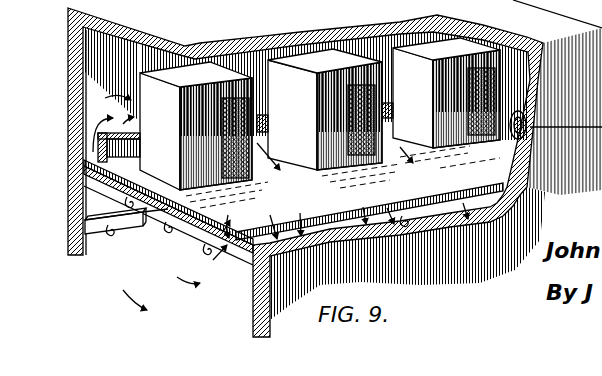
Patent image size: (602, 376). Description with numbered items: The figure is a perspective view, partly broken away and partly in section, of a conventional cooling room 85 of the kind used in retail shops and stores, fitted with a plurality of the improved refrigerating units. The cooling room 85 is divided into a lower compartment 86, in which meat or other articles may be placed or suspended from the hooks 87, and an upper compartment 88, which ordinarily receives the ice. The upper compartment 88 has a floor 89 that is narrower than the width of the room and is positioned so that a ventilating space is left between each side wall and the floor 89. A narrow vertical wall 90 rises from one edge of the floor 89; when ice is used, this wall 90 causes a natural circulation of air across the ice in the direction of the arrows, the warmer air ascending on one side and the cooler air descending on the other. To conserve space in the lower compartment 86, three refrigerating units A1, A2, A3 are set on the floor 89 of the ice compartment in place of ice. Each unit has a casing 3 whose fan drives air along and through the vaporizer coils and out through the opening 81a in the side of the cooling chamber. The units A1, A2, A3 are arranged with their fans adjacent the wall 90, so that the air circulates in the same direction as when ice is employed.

The casing 3 is at (320, 114).
The refrigerating unit A1 is at (196, 126).
The refrigerating unit A2 is at (325, 109).
The refrigerating unit A3 is at (446, 93).
The opening 81a is at (245, 168).
The cooling room 85 is at (289, 172).
The lower compartment 86 is at (126, 242).
The hooks 87 is at (203, 249).
The upper compartment 88 is at (111, 74).
The floor 89 is at (236, 261).
The vertical wall 90 is at (95, 144).